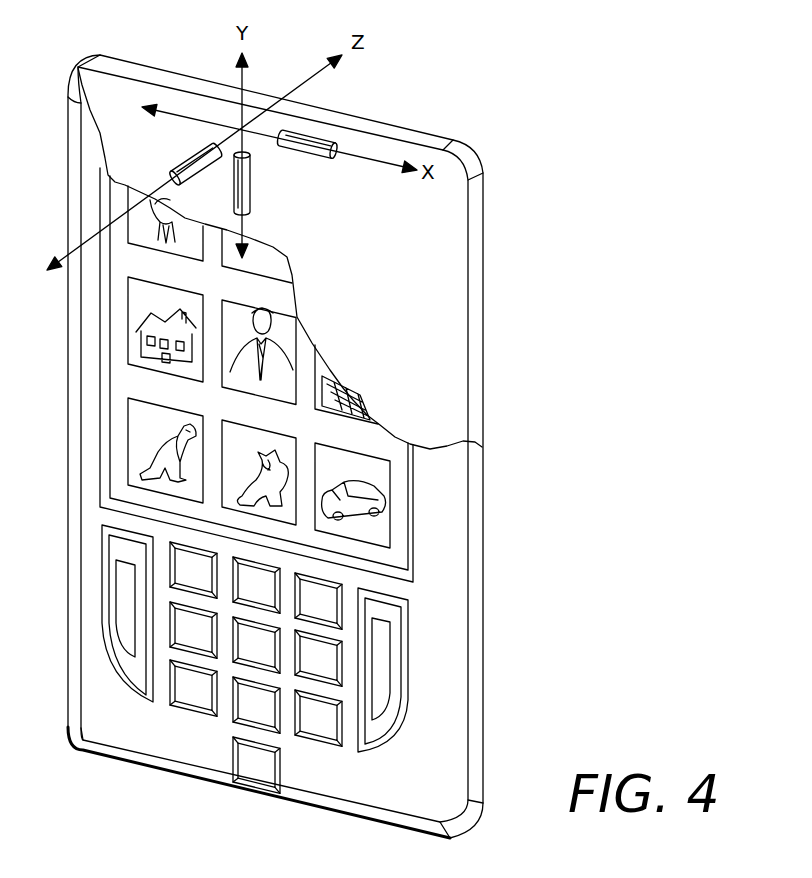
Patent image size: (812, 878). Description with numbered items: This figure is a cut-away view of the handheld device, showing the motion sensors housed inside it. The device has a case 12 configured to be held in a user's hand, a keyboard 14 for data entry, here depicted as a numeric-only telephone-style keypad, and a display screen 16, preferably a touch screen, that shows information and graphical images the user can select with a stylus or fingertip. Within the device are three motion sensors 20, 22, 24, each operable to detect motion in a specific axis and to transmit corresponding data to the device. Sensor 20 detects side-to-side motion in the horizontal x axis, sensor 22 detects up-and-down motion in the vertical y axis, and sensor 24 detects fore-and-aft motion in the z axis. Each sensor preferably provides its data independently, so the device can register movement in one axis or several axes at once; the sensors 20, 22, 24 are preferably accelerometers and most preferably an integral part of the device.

The case 12 is at (475, 275).
The keyboard 14 is at (60, 712).
The display screen 16 is at (398, 467).
The motion sensor 20 is at (310, 138).
The motion sensor 22 is at (252, 182).
The motion sensor 24 is at (190, 158).